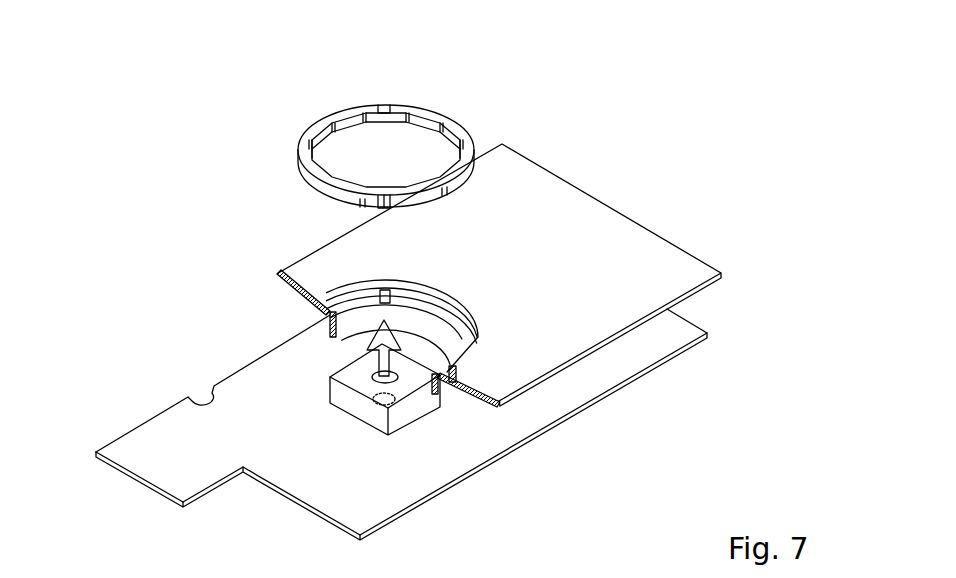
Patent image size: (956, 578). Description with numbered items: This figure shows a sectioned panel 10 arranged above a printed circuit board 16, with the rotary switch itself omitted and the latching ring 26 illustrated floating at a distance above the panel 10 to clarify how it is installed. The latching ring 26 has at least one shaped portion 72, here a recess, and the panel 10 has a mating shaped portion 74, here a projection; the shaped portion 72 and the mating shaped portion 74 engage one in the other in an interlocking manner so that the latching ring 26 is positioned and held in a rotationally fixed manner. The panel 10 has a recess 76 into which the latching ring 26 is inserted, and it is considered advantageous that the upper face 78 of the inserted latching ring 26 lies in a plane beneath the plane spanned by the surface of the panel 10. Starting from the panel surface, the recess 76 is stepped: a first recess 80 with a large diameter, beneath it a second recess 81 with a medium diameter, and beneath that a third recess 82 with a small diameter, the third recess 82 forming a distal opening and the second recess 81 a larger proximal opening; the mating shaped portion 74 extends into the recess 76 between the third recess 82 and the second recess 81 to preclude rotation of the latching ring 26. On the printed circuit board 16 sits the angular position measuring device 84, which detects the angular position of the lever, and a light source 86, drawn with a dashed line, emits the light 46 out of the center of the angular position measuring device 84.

The panel 10 is at (613, 232).
The printed circuit board 16 is at (165, 457).
The latching ring 26 is at (452, 127).
The light 46 is at (377, 364).
The shaped portion 72 is at (396, 107).
The mating shaped portion 74 is at (383, 290).
The recess 76 is at (331, 336).
The upper face 78 is at (324, 116).
The first recess 80 is at (350, 296).
The second recess 81 is at (440, 302).
The third recess 82 is at (443, 340).
The angular position measuring device 84 is at (323, 429).
The light source 86 is at (400, 403).